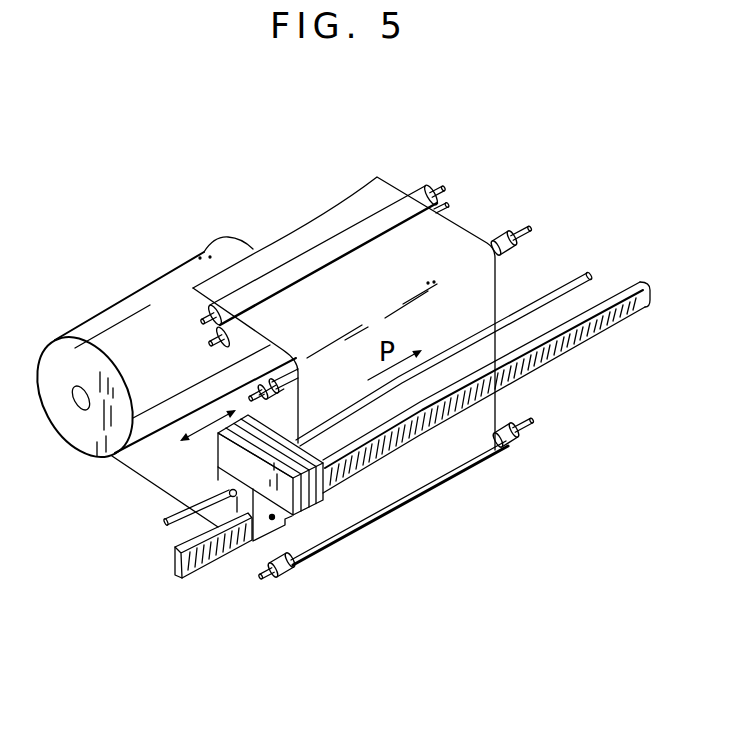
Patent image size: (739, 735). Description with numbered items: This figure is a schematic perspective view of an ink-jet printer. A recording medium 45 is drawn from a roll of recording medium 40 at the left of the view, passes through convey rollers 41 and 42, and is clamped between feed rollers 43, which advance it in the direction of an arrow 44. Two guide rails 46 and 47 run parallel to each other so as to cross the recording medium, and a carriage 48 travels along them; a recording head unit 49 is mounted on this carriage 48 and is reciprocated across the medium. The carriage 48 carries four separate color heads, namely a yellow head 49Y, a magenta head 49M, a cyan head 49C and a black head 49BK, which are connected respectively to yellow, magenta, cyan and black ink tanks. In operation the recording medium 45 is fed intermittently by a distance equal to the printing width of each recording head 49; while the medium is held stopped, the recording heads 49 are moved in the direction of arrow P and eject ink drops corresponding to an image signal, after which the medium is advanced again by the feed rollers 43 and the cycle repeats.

The roll of recording medium 40 is at (167, 287).
The convey roller 41 is at (512, 447).
The convey roller 42 is at (507, 228).
The feed rollers 43 is at (427, 183).
The arrow 44 is at (258, 202).
The recording medium 45 is at (450, 475).
The guide rail 46 is at (576, 272).
The guide rail 47 is at (583, 345).
The carriage 48 is at (217, 475).
The recording head unit 49 is at (213, 453).
The black head 49BK is at (297, 512).
The cyan head 49C is at (304, 509).
The magenta head 49M is at (312, 508).
The yellow head 49Y is at (326, 504).